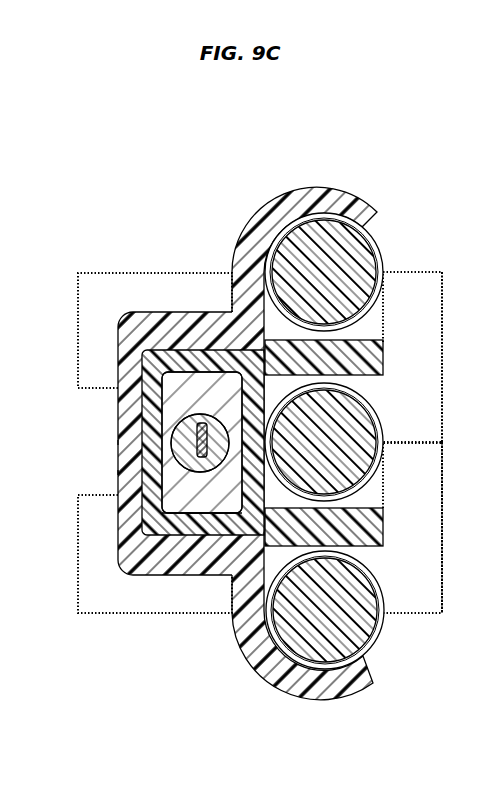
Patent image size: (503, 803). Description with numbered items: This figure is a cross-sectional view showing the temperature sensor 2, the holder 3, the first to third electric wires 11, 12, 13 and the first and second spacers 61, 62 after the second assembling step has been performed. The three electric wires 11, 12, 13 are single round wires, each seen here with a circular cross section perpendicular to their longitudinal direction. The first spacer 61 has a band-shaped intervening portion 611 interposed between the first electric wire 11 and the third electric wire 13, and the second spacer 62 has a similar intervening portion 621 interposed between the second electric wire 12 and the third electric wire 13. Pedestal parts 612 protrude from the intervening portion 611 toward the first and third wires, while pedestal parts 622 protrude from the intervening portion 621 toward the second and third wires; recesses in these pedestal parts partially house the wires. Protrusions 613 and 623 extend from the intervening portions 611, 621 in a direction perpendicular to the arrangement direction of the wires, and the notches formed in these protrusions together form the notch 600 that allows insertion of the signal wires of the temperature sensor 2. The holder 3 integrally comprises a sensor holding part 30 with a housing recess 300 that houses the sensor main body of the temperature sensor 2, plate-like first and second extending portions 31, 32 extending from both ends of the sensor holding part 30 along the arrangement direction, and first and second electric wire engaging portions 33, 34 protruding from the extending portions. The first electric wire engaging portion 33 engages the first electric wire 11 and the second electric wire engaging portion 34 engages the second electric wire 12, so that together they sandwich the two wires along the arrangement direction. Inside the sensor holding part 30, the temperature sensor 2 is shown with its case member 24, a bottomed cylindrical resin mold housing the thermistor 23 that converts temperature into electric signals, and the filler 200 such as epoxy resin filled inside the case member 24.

The holder 3 is at (252, 186).
The temperature sensor 2 is at (130, 371).
The first electric wire 11 is at (373, 238).
The second electric wire 12 is at (375, 412).
The third electric wire 13 is at (375, 580).
The thermistor 23 is at (162, 423).
The case member 24 is at (145, 493).
The sensor holding part 30 is at (178, 323).
The first extending portion 31 is at (252, 257).
The second extending portion 32 is at (235, 615).
The first electric wire engaging portion 33 is at (342, 197).
The second electric wire engaging portion 34 is at (340, 687).
The first spacer 61 is at (440, 254).
The second spacer 62 is at (438, 625).
The filler 200 is at (168, 500).
The housing recess 300 is at (175, 547).
The notch 600 is at (80, 466).
The intervening portion 611 is at (370, 343).
The pedestal part 612 is at (430, 363).
The protrusion 613 is at (85, 315).
The intervening portion 621 is at (370, 512).
The pedestal part 622 is at (430, 542).
The protrusion 623 is at (107, 603).